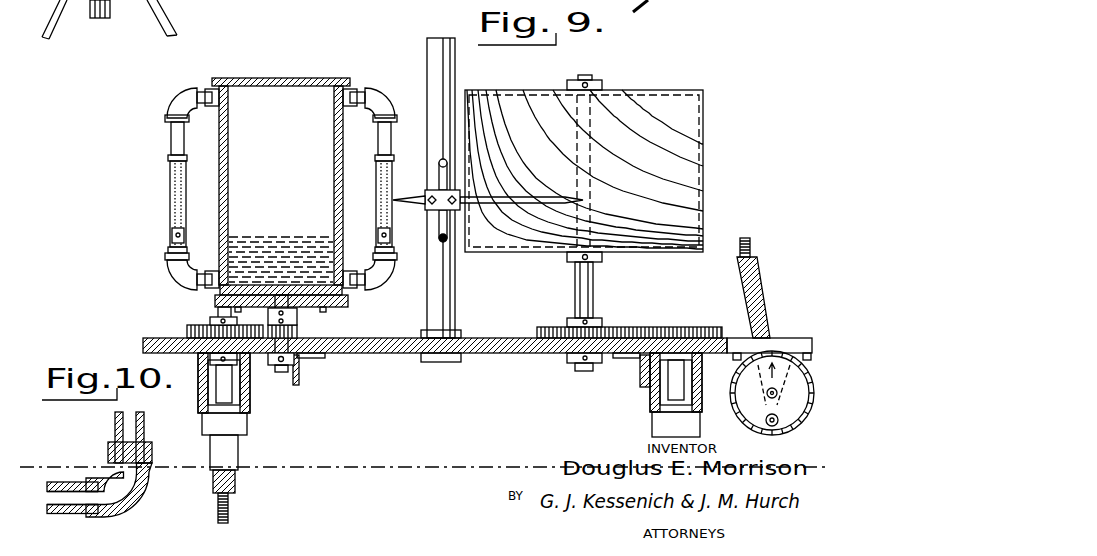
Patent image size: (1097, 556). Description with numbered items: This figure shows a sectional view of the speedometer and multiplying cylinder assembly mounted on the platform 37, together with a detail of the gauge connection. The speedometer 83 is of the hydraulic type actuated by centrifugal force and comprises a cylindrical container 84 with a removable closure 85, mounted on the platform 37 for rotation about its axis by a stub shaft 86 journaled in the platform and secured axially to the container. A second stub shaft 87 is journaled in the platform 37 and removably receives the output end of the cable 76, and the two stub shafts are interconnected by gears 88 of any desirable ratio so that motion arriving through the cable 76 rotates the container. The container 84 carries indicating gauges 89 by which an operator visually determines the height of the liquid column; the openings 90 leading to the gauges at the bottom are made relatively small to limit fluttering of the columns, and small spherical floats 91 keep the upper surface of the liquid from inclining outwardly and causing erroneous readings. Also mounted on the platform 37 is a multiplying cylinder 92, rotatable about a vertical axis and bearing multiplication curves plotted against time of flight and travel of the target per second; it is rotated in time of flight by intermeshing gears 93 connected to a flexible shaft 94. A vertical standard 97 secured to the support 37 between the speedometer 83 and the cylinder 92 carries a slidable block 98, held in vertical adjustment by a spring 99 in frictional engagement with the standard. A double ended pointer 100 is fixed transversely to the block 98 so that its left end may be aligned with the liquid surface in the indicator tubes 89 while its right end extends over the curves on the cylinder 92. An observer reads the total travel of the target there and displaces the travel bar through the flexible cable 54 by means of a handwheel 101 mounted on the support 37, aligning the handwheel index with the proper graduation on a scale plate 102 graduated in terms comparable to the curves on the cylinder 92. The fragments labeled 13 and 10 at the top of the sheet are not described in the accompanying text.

In FIG. 9, the leg 10 is at (168, 8).
In FIG. 9, the block 13 is at (110, 8).
In FIG. 9, the platform 37 is at (398, 354).
In FIG. 9, the flexible cable 54 is at (757, 270).
In FIG. 9, the cable 76 is at (229, 502).
In FIG. 9, the speedometer 83 is at (166, 192).
In FIG. 9, the cylindrical container 84 is at (343, 155).
In FIG. 9, the removable closure 85 is at (311, 69).
In FIG. 9, the stub shaft 86 is at (283, 367).
In FIG. 9, the second stub shaft 87 is at (222, 318).
In FIG. 9, the gears 88 is at (287, 340).
In FIG. 9, the indicating gauges 89 is at (171, 146).
In FIG. 10, the indicating gauges 89 is at (144, 430).
In FIG. 10, the openings 90 is at (139, 469).
In FIG. 9, the floats 91 is at (175, 236).
In FIG. 9, the multiplying cylinder 92 is at (703, 124).
In FIG. 9, the intermeshing gears 93 is at (632, 323).
In FIG. 9, the flexible shaft 94 is at (652, 435).
In FIG. 9, the vertical standard 97 is at (430, 56).
In FIG. 9, the block 98 is at (426, 191).
In FIG. 9, the spring 99 is at (439, 166).
In FIG. 9, the double ended pointer 100 is at (410, 204).
In FIG. 9, the handwheel 101 is at (752, 411).
In FIG. 9, the scale plate 102 is at (760, 422).